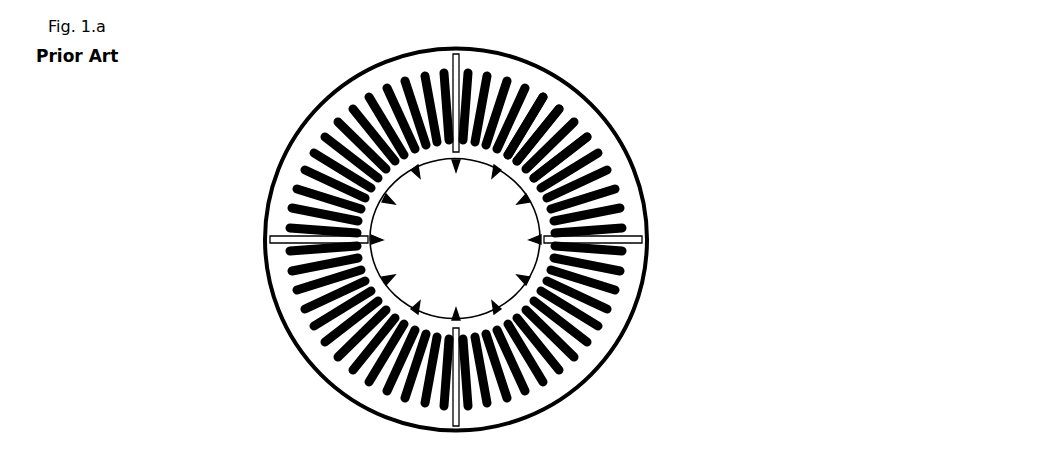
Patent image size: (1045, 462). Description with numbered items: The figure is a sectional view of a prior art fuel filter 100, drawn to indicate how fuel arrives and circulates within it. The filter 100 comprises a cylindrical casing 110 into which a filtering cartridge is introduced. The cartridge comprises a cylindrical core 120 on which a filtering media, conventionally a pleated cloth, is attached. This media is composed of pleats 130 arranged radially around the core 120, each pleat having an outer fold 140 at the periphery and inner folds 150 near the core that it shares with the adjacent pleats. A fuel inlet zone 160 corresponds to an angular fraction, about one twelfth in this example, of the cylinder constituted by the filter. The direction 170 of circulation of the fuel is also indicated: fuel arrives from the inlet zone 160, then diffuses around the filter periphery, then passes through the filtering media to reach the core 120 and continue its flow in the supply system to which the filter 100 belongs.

The filter 100 is at (94, 120).
The cylindrical casing 110 is at (450, 49).
The cylindrical core 120 is at (432, 163).
The pleats 130 is at (581, 128).
The outer fold 140 is at (566, 111).
The inner folds 150 is at (515, 192).
The fuel inlet zone 160 is at (552, 96).
The direction of circulation of the fuel 170 is at (358, 398).